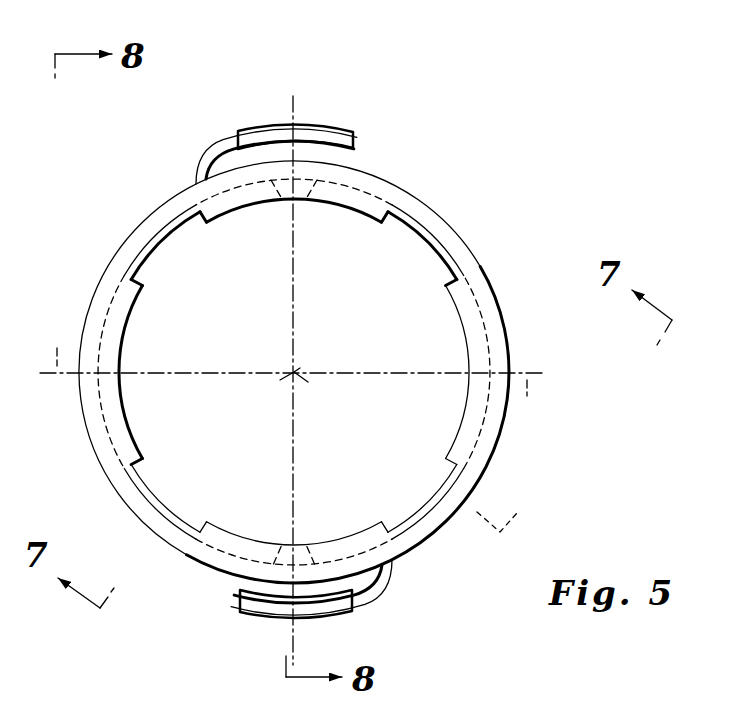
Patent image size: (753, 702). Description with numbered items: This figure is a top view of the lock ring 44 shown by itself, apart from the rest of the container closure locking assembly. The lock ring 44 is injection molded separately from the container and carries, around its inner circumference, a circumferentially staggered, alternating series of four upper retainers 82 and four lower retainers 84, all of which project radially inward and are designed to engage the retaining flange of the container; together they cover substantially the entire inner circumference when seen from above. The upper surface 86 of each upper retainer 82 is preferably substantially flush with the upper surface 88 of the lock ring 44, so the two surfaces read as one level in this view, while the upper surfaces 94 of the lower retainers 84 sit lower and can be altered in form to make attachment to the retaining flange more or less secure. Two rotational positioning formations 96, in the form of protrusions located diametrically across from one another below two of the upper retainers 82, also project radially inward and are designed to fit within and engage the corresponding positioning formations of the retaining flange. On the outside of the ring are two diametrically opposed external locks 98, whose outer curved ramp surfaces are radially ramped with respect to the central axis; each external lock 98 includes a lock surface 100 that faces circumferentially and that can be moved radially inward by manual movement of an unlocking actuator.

The lock ring 44 is at (492, 212).
The upper retainers 82 is at (462, 331).
The lower retainers 84 is at (151, 262).
The upper surface of the upper retainers 86 is at (478, 318).
The upper surface of the lock ring 88 is at (436, 226).
The upper surfaces of the lower retainers 94 is at (143, 240).
The rotational positioning formations 96 is at (303, 199).
The external locks 98 is at (207, 155).
The lock surfaces 100 is at (292, 140).